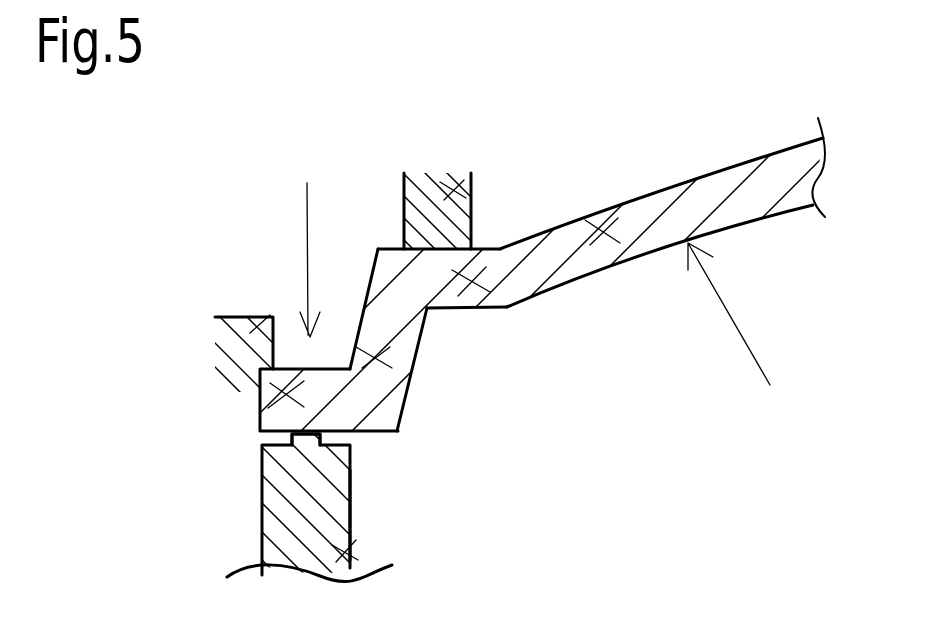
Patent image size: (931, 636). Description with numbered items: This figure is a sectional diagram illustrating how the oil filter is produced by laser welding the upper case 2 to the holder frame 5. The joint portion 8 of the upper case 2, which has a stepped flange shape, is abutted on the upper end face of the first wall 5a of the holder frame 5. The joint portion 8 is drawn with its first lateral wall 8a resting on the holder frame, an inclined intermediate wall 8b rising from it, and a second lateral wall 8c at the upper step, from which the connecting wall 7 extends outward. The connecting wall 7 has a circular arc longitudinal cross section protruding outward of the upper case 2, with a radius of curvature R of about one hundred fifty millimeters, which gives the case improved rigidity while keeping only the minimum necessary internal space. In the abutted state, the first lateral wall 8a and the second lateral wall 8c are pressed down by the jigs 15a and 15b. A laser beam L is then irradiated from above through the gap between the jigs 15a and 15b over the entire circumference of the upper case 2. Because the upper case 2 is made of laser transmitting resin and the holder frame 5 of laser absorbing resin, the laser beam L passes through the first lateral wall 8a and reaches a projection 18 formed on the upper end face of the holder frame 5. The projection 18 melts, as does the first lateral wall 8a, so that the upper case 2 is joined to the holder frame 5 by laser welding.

The upper case 2 is at (662, 158).
The holder frame 5 is at (350, 378).
The first wall 5a is at (345, 552).
The connecting wall 7 is at (601, 233).
The joint portion 8 is at (465, 318).
The first lateral wall 8a is at (268, 395).
The inclined portion of bracket (9b) 8b is at (376, 357).
The second lateral wall 8c is at (470, 285).
The jig 15a is at (250, 318).
The jig 15b is at (456, 191).
The projection 18 is at (313, 438).
The laser beam L is at (307, 228).
The radius of curvature R is at (730, 317).